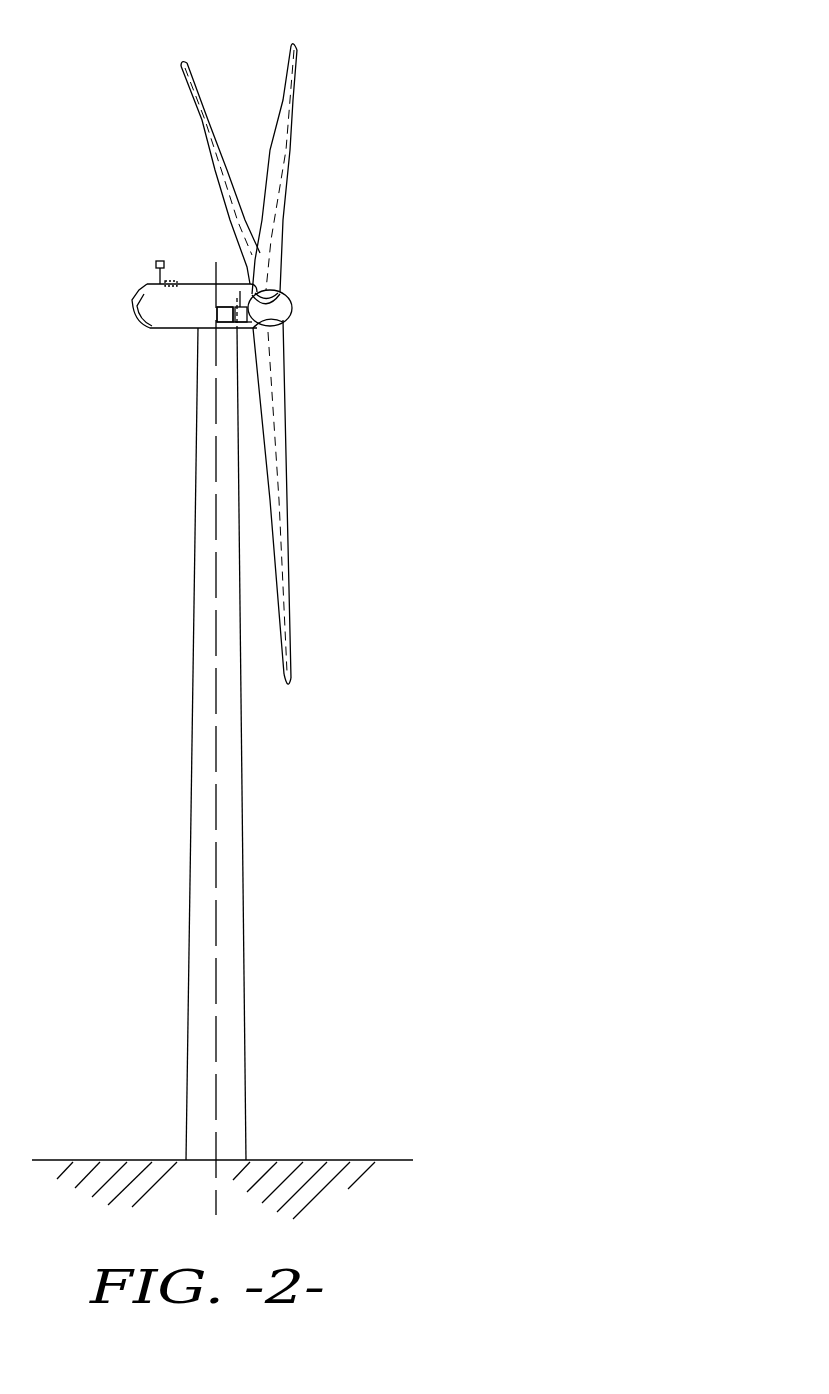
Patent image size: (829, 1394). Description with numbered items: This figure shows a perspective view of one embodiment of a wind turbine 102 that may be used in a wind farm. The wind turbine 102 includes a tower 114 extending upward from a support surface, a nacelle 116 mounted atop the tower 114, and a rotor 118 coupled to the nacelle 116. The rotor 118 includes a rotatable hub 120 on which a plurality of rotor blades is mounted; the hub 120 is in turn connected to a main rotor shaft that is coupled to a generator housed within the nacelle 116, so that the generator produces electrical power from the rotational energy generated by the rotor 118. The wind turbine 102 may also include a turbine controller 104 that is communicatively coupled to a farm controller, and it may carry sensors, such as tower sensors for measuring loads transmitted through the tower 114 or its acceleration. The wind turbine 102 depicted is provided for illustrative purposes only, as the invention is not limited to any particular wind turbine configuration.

The wind turbine 102 is at (296, 617).
The turbine controller 104 is at (236, 275).
The tower 114 is at (190, 860).
The nacelle 116 is at (172, 330).
The rotor 118 is at (325, 281).
The hub 120 is at (292, 308).